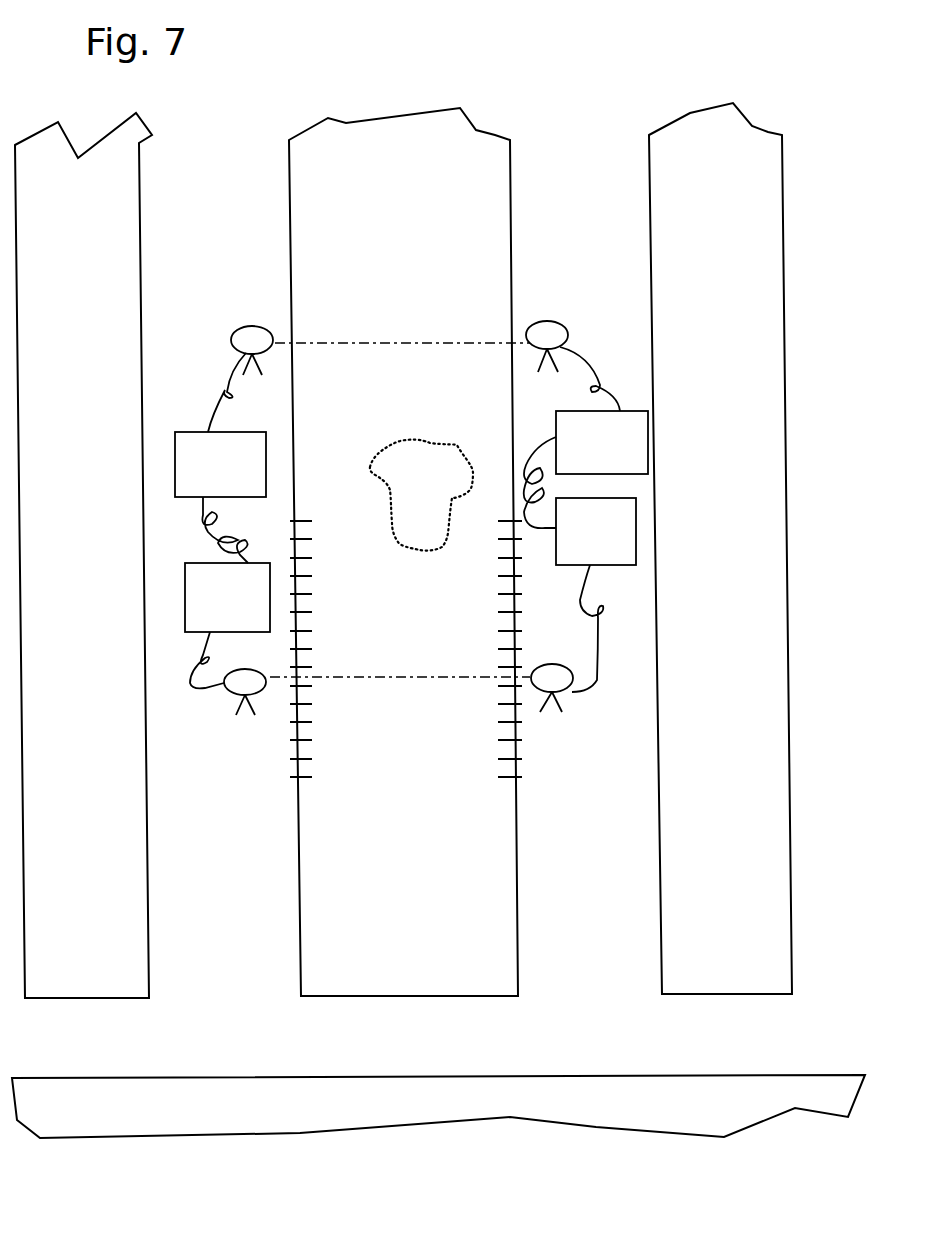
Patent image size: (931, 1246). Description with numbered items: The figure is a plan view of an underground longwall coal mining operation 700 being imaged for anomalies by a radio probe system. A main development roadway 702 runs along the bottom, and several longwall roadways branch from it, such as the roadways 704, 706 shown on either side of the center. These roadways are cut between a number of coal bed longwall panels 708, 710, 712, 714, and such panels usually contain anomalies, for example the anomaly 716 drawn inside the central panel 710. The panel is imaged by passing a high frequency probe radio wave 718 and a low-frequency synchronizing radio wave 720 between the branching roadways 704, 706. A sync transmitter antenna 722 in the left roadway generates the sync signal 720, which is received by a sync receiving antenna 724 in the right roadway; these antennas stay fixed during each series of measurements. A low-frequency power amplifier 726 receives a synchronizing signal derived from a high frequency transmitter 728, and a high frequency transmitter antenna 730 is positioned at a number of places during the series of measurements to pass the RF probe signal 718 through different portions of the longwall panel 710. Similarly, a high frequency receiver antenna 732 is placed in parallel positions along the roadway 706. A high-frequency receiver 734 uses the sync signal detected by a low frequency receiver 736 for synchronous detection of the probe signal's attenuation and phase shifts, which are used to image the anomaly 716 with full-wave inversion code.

The longwall coal mine system 700 is at (306, 60).
The main development roadway 702 is at (448, 1042).
The longwall roadway 704 is at (211, 517).
The longwall roadway 706 is at (577, 515).
The coal bed longwall panel 708 is at (83, 555).
The coal bed longwall panel 710 is at (405, 552).
The coal bed longwall panel 712 is at (720, 548).
The coal bed longwall panel 714 is at (438, 1106).
The anomaly 716 is at (448, 443).
The high frequency probe radio wave 718 is at (393, 680).
The low-frequency synchronizing radio wave 720 is at (350, 338).
The sync transmitter antenna 722 is at (257, 322).
The sync receiving antenna 724 is at (574, 330).
The low-frequency power amplifier 726 is at (195, 432).
The high frequency transmitter 728 is at (185, 578).
The high frequency transmitter antenna 730 is at (228, 698).
The high frequency receiver antenna 732 is at (575, 668).
The high-frequency receiver 734 is at (636, 548).
The low frequency receiver 736 is at (634, 408).